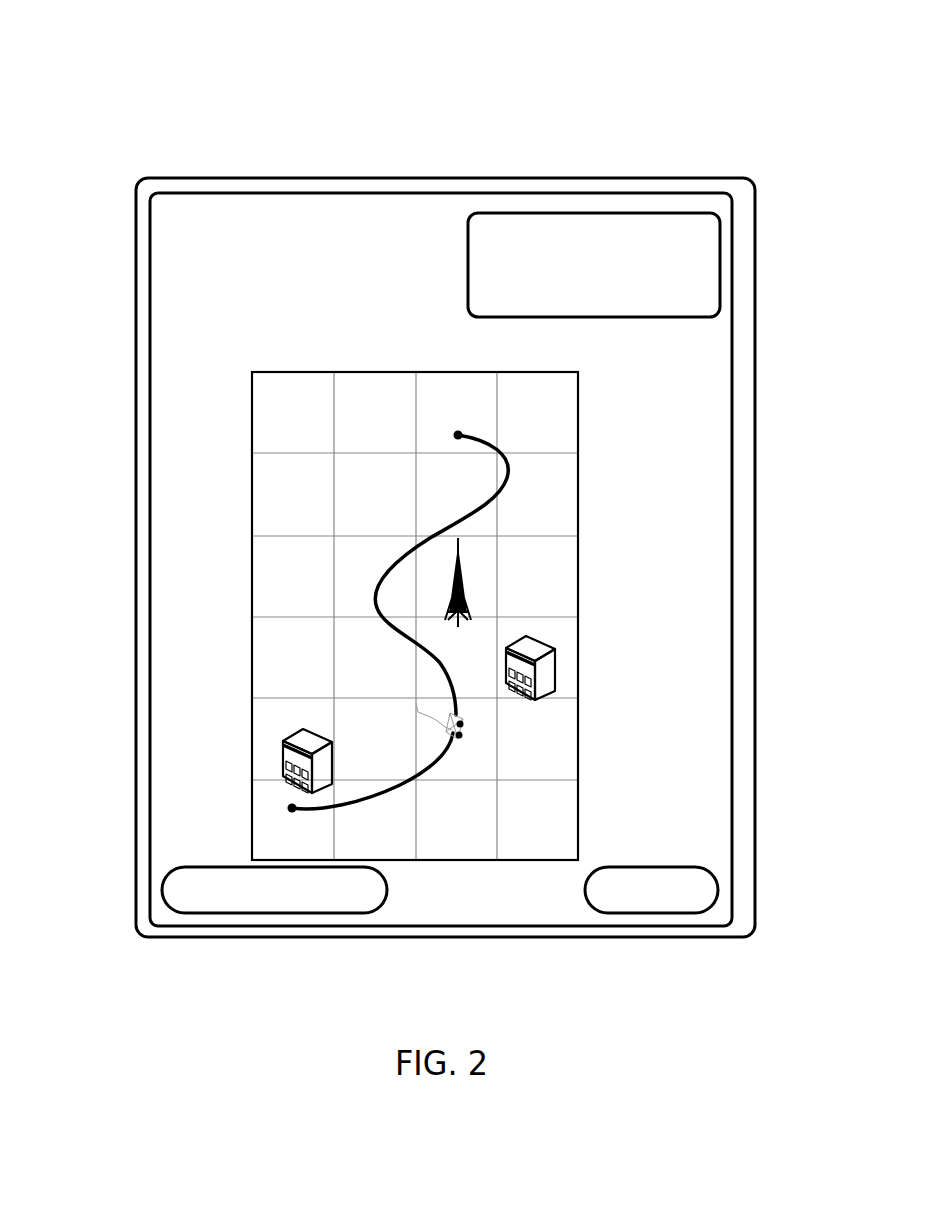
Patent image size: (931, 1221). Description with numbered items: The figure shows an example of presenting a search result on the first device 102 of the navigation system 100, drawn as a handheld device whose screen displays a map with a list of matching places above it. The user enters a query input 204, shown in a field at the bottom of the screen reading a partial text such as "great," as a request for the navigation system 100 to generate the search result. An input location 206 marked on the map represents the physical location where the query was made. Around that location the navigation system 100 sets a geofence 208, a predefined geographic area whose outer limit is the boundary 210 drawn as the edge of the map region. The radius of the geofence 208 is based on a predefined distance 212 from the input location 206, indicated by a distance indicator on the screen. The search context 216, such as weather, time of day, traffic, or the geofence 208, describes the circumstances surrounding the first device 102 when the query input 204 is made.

The navigation system 100 is at (243, 50).
The first device 102 is at (217, 178).
The search context 216 is at (690, 385).
The boundary 210 is at (328, 506).
The geofence 208 is at (563, 505).
The predefined distance 212 is at (425, 722).
The input location 206 is at (465, 727).
The query input 204 is at (218, 883).